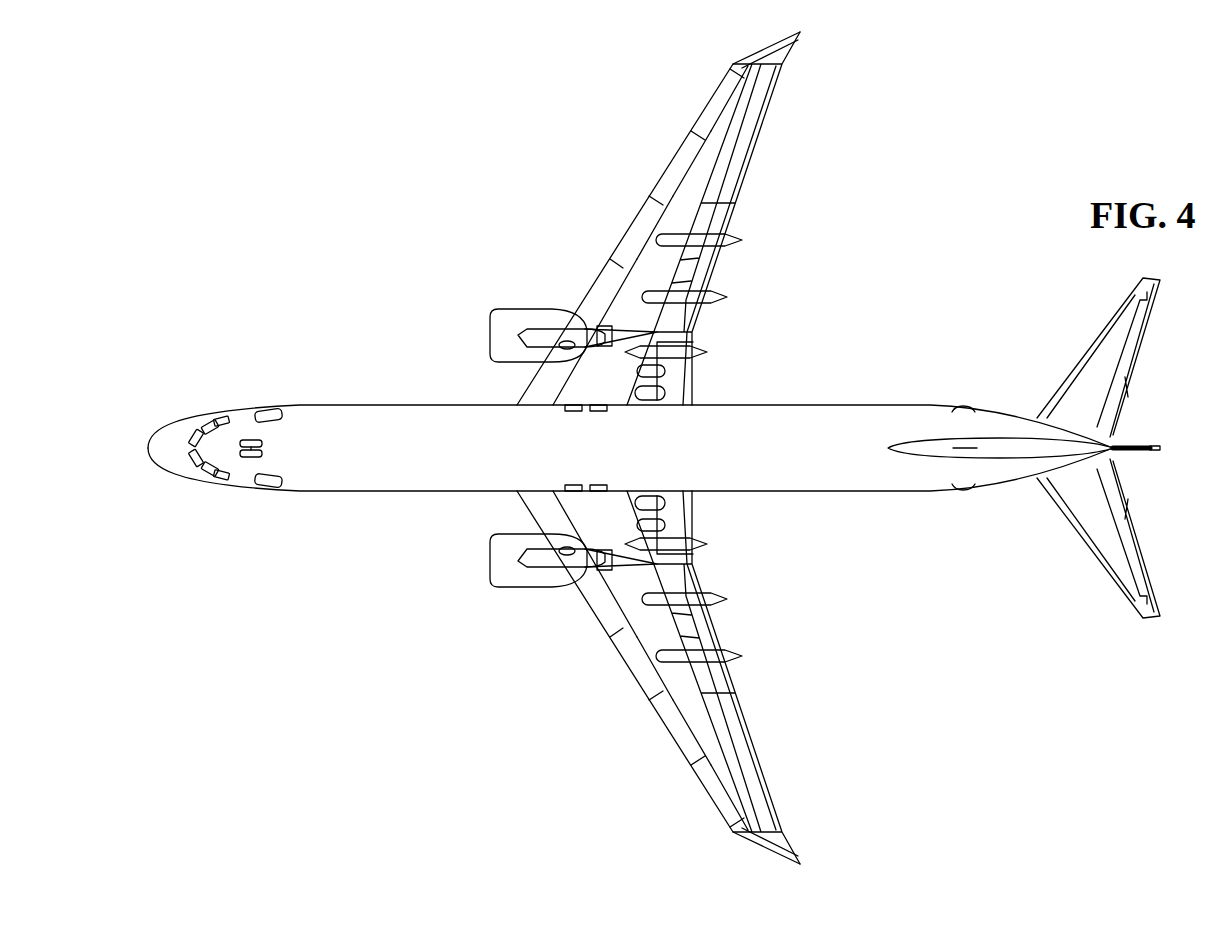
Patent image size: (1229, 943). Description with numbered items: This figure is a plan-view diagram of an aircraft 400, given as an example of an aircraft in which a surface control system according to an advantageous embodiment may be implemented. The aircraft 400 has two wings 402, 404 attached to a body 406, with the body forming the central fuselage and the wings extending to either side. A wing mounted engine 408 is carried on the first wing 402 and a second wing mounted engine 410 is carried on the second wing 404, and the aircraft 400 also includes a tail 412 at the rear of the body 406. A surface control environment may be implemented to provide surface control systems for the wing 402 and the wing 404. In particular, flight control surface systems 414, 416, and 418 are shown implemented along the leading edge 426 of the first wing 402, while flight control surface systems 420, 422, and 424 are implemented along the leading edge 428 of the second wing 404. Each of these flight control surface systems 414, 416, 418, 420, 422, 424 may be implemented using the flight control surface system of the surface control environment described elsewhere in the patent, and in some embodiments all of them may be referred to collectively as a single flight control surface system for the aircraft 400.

The aircraft 400 is at (348, 168).
The wing 402 is at (762, 138).
The wing 404 is at (762, 758).
The body 406 is at (348, 413).
The wing mounted engine 408 is at (492, 337).
The wing mounted engine 410 is at (490, 562).
The tail 412 is at (1097, 358).
The flight control surface system 414 is at (712, 90).
The flight control surface system 416 is at (680, 162).
The flight control surface system 418 is at (627, 240).
The flight control surface system 420 is at (628, 660).
The flight control surface system 422 is at (678, 735).
The flight control surface system 424 is at (712, 805).
The leading edge 426 is at (542, 392).
The leading edge 428 is at (540, 500).